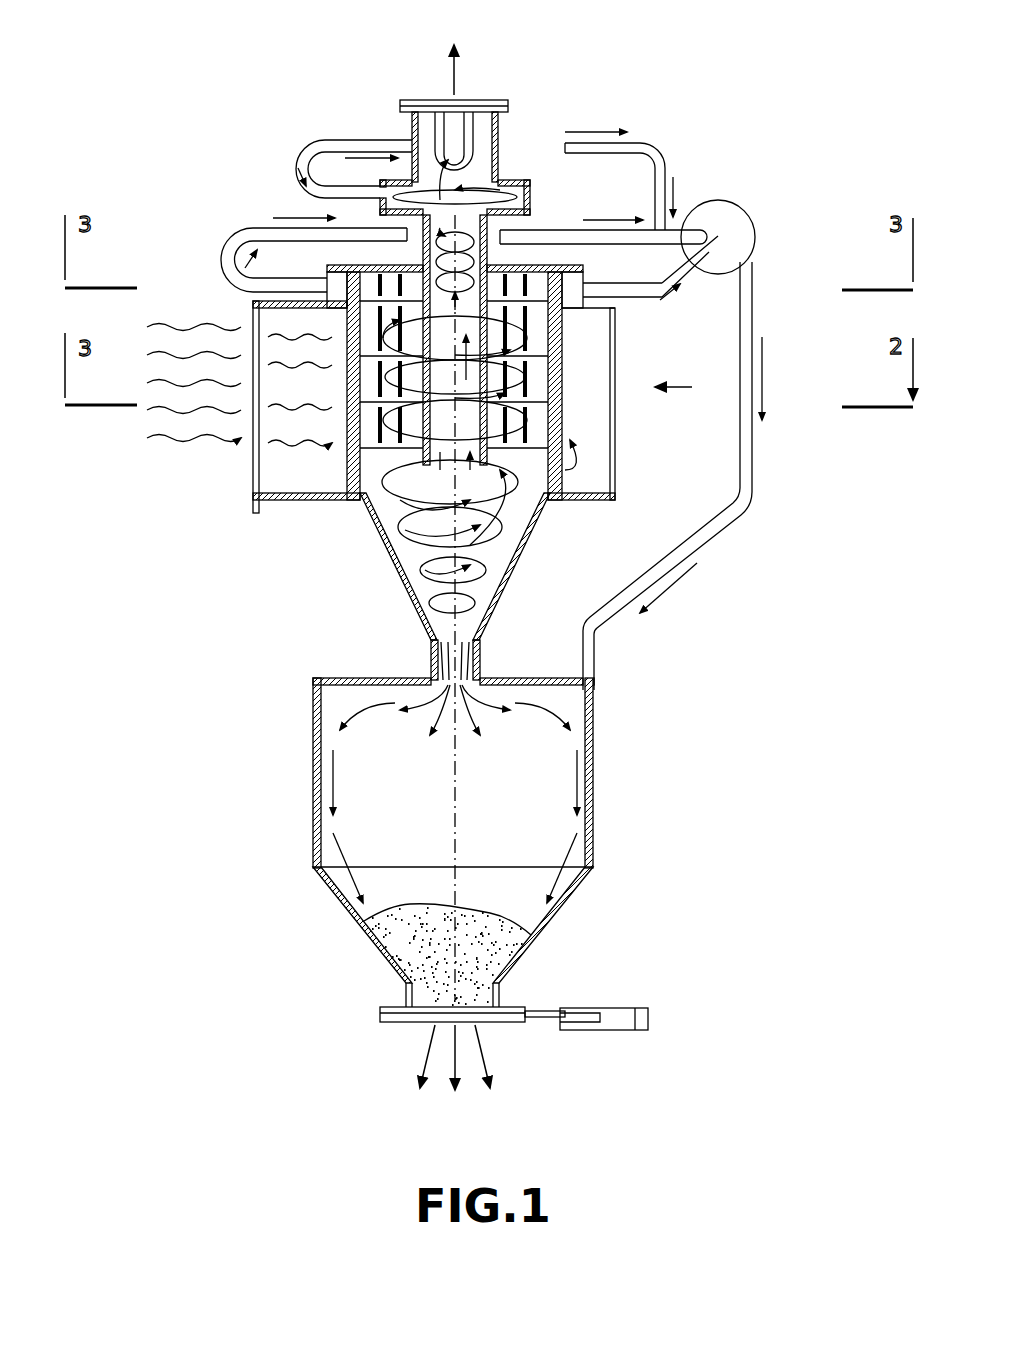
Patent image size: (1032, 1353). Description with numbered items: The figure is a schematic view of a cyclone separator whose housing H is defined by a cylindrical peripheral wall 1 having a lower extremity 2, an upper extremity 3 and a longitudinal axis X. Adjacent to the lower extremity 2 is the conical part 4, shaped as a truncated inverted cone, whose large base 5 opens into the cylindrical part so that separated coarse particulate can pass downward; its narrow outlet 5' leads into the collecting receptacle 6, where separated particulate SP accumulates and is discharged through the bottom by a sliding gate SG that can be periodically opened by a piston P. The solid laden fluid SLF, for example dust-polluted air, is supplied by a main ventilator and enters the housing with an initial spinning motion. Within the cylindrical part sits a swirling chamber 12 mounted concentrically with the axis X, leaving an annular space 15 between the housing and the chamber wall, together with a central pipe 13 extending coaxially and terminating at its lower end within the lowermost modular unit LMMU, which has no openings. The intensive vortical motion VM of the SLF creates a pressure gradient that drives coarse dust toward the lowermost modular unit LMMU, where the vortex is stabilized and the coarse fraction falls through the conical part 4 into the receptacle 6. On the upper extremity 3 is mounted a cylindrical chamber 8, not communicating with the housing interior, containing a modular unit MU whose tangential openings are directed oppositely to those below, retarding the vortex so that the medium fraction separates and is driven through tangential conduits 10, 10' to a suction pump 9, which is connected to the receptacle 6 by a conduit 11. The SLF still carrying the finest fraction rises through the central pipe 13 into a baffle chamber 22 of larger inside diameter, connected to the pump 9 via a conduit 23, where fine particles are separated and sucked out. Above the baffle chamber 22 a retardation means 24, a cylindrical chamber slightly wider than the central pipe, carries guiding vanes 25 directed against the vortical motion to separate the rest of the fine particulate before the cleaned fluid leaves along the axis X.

The cylindrical peripheral wall 1 is at (254, 500).
The lower extremity 2 is at (329, 500).
The upper extremity 3 is at (297, 305).
The conical part 4 is at (403, 582).
The large base 5 is at (455, 350).
The throat outlet 5' is at (482, 660).
The collecting receptacle 6 is at (313, 780).
The cylindrical chamber 8 is at (568, 282).
The suction pump 9 is at (738, 232).
The tangential conduit 10 is at (293, 255).
The tangential conduit 10' is at (650, 281).
The conduit 11 is at (752, 488).
The swirling chamber 12 is at (552, 420).
The central pipe 13 is at (497, 230).
The annular space 15 is at (282, 467).
The baffle chamber 22 is at (529, 183).
The conduit 23 is at (310, 160).
The retardation means 24 is at (426, 142).
The guiding vanes 25 is at (470, 160).
The longitudinal axis X is at (455, 575).
The solid laden fluid SLF is at (155, 417).
The modular unit MU is at (570, 313).
The housing H is at (683, 387).
The lowermost modular unit LMMU is at (568, 473).
The vortical motion VM is at (510, 565).
The separated particulate SP is at (407, 933).
The sliding gate SG is at (537, 1022).
The piston P is at (630, 1008).